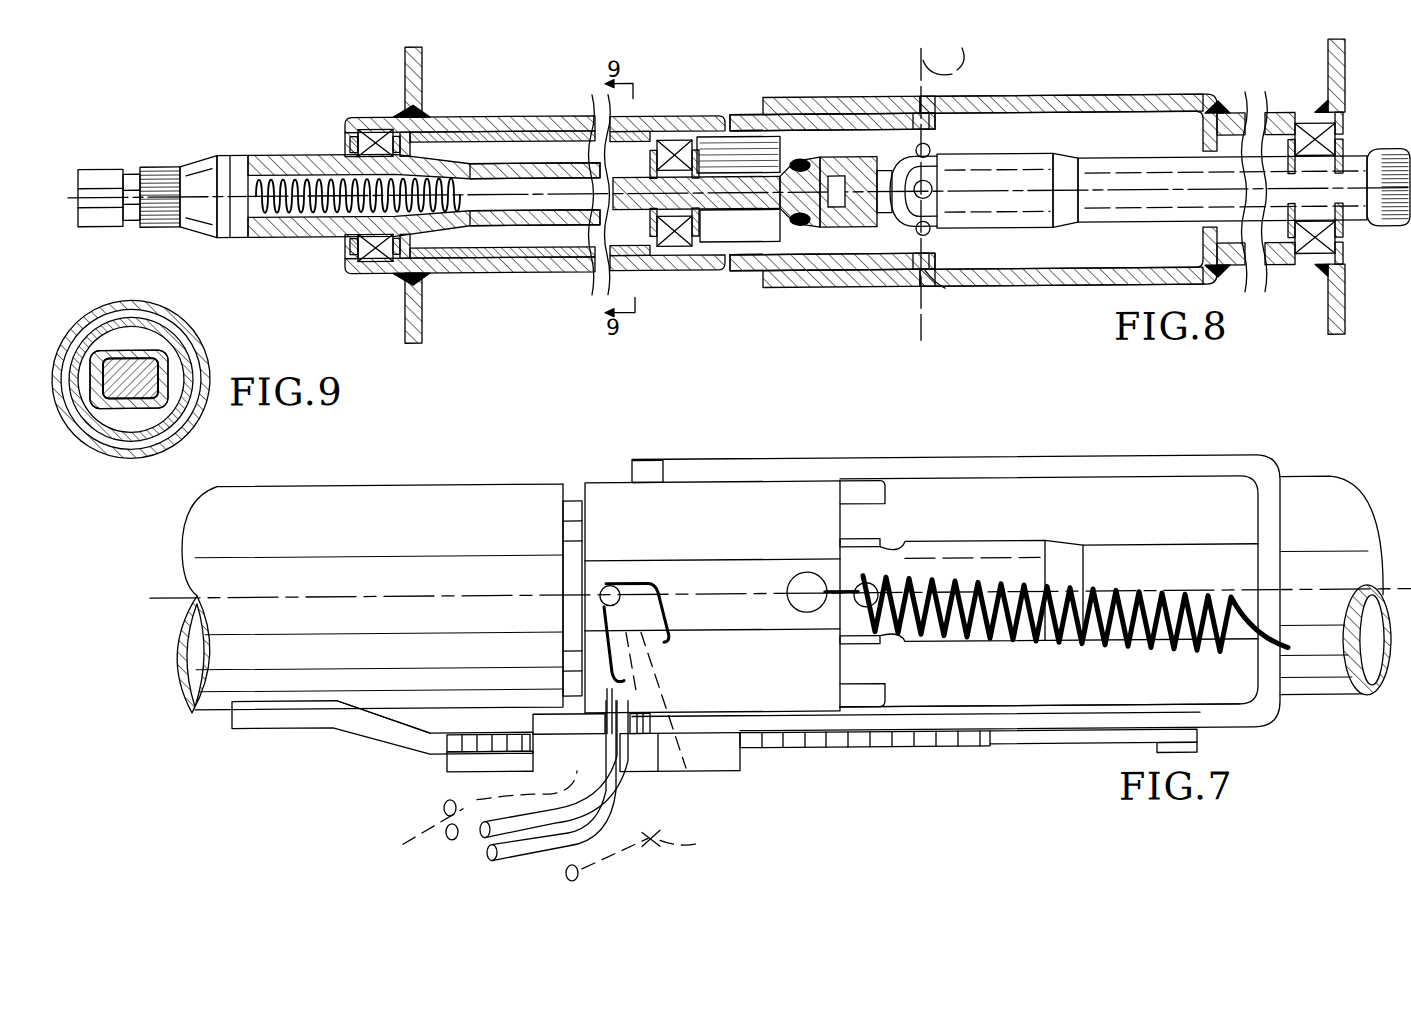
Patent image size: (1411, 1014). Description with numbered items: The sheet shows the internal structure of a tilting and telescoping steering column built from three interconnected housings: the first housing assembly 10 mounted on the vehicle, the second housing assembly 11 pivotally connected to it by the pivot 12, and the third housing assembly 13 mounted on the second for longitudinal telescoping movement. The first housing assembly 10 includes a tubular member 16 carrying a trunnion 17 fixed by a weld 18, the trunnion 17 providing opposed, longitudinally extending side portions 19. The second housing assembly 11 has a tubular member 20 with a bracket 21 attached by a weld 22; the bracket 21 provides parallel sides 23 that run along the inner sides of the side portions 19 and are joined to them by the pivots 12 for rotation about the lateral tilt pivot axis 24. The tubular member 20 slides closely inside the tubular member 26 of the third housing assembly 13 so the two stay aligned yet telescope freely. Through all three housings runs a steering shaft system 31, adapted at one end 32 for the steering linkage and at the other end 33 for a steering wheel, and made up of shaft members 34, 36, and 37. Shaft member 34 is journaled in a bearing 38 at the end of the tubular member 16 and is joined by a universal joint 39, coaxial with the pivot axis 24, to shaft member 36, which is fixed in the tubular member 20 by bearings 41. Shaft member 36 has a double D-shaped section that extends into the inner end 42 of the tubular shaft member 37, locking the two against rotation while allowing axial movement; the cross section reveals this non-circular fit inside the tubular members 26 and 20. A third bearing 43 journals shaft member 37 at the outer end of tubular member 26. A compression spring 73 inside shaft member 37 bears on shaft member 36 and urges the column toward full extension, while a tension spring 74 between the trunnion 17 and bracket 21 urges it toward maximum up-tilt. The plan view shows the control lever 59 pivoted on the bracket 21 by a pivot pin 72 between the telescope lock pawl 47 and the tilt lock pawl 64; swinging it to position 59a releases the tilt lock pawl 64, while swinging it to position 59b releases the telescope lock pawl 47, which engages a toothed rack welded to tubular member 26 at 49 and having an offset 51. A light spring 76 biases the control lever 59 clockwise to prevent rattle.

In FIG. 8, the first housing assembly 10 is at (1238, 82).
In FIG. 8, the second housing assembly 11 is at (744, 113).
In FIG. 8, the pivot 12 is at (935, 288).
In FIG. 8, the third housing assembly 13 is at (518, 112).
In FIG. 7, the third housing assembly 13 is at (446, 482).
In FIG. 8, the tubular member 16 is at (1286, 117).
In FIG. 7, the tubular member 16 is at (1318, 490).
In FIG. 8, the trunnion 17 is at (1100, 98).
In FIG. 7, the trunnion 17 is at (1024, 457).
In FIG. 8, the weld 18 is at (1228, 116).
In FIG. 8, the side portions 19 is at (1050, 98).
In FIG. 7, the side portions 19 is at (1046, 706).
In FIG. 8, the tubular member 20 is at (640, 258).
In FIG. 9, the tubular member 20 is at (165, 427).
In FIG. 8, the bracket 21 is at (757, 273).
In FIG. 7, the bracket 21 is at (795, 500).
In FIG. 8, the weld 22 is at (786, 255).
In FIG. 8, the parallel sides 23 is at (853, 99).
In FIG. 8, the lateral tilt pivot axis 24 is at (958, 50).
In FIG. 8, the tubular member 26 is at (537, 260).
In FIG. 9, the tubular member 26 is at (100, 440).
In FIG. 7, the tubular member 26 is at (371, 520).
In FIG. 8, the steering shaft system 31 is at (1072, 158).
In FIG. 8, the end 32 is at (1390, 158).
In FIG. 8, the end 33 is at (162, 163).
In FIG. 8, the shaft member 34 is at (1138, 163).
In FIG. 7, the shaft member 34 is at (1178, 568).
In FIG. 8, the shaft member 36 is at (722, 210).
In FIG. 9, the shaft member 36 is at (130, 362).
In FIG. 8, the shaft member 37 is at (298, 235).
In FIG. 9, the shaft member 37 is at (172, 366).
In FIG. 8, the bearing 38 is at (1305, 262).
In FIG. 8, the universal joint 39 is at (948, 150).
In FIG. 8, the bearings 41 is at (683, 250).
In FIG. 8, the inner end 42 is at (540, 163).
In FIG. 9, the inner end 42 is at (162, 353).
In FIG. 8, the third bearing 43 is at (372, 128).
In FIG. 7, the telescope lock pawl 47 is at (655, 752).
In FIG. 7, the weld location 49 is at (275, 706).
In FIG. 7, the offset 51 is at (398, 737).
In FIG. 7, the control lever 59 is at (525, 848).
In FIG. 7, the phantom position 59a is at (474, 819).
In FIG. 7, the phantom line position 59b is at (661, 853).
In FIG. 7, the tilt lock pawl 64 is at (558, 715).
In FIG. 7, the pivot pin 72 is at (616, 586).
In FIG. 8, the compression spring 73 is at (304, 178).
In FIG. 7, the tension spring 74 is at (975, 590).
In FIG. 7, the light spring 76 is at (664, 608).